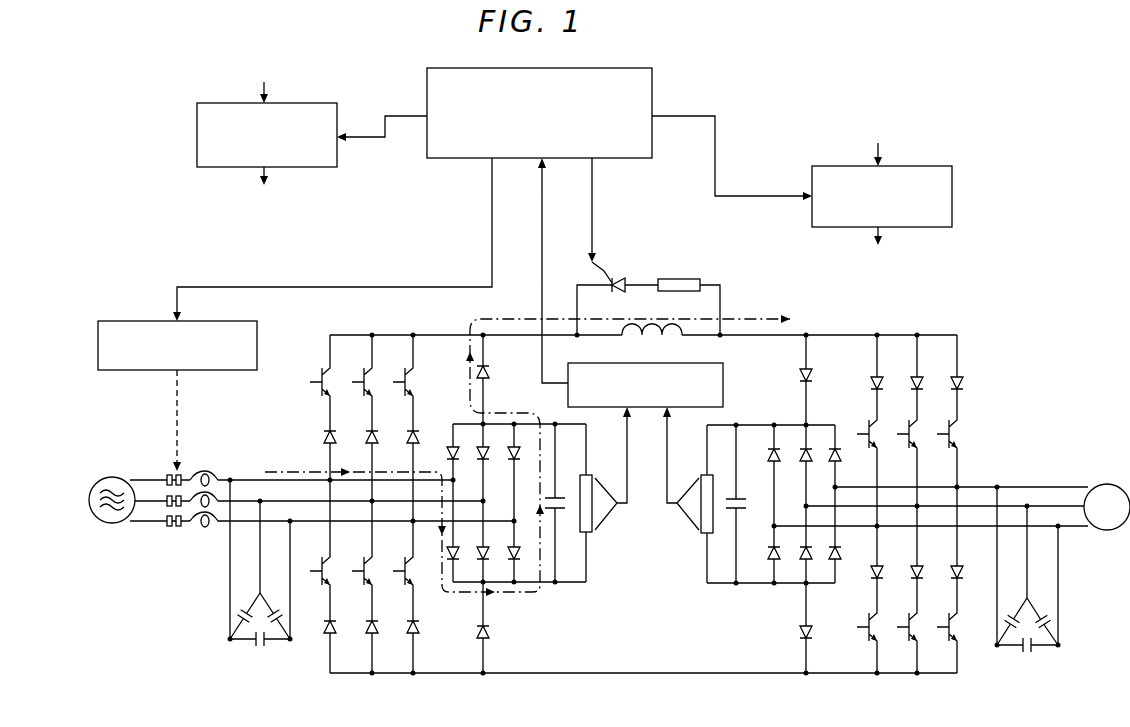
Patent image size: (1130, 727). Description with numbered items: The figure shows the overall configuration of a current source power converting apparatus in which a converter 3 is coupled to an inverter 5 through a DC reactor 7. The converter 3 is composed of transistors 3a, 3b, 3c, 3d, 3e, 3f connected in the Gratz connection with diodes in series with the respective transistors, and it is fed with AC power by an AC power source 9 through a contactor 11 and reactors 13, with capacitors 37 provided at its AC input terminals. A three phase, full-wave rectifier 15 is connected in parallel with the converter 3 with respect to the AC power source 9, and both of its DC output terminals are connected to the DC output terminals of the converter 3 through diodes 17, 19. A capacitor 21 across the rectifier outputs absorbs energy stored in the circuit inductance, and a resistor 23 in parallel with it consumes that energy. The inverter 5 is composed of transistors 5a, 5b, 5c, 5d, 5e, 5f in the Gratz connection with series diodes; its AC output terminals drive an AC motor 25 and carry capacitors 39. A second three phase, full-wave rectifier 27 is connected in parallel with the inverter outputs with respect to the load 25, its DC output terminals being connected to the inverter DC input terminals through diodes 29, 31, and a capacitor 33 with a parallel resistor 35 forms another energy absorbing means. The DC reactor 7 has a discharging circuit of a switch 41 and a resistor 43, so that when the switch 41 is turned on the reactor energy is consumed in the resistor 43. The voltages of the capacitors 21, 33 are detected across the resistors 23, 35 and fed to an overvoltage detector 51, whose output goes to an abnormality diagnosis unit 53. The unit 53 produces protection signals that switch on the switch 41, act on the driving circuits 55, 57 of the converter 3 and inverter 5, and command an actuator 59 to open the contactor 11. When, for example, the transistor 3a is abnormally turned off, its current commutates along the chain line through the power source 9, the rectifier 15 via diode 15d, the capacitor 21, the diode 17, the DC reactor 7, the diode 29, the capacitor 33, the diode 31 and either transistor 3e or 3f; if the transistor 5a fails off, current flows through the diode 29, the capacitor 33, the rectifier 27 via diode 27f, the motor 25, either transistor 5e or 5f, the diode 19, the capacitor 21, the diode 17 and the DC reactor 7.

The converter 3 is at (351, 520).
The transistor 3a is at (310, 382).
The transistor 3b is at (352, 382).
The transistor 3c is at (393, 382).
The transistor 3d is at (310, 571).
The transistor 3e is at (352, 571).
The transistor 3f is at (393, 571).
The inverter 5 is at (891, 520).
The transistor 5a is at (857, 434).
The transistor 5b is at (897, 434).
The transistor 5c is at (937, 434).
The transistor 5d is at (857, 627).
The transistor 5e is at (897, 627).
The transistor 5f is at (937, 627).
The DC reactor 7 is at (672, 340).
The AC power source 9 is at (118, 477).
The contactor 11 is at (174, 530).
The reactor 13 is at (206, 528).
The three phase full-wave rectifier 15 is at (505, 522).
The diode 15d is at (451, 562).
The diode 17 is at (490, 372).
The diode 19 is at (490, 632).
The capacitor 21 is at (563, 496).
The resistor 23 is at (592, 534).
The AC motor 25 is at (1098, 485).
The three phase full-wave rectifier 27 is at (791, 519).
The diode 27f is at (840, 570).
The diode 29 is at (813, 376).
The diode 31 is at (800, 635).
The capacitor 33 is at (740, 499).
The resistor 35 is at (702, 535).
The capacitor 37 is at (236, 645).
The capacitor 39 is at (1042, 650).
The switch 41 is at (614, 277).
The resistor 43 is at (678, 279).
The overvoltage detector 51 is at (723, 377).
The abnormality diagnosis unit 53 is at (603, 70).
The driving circuit 55 is at (197, 117).
The driving circuit 57 is at (952, 179).
The actuator 59 is at (132, 320).